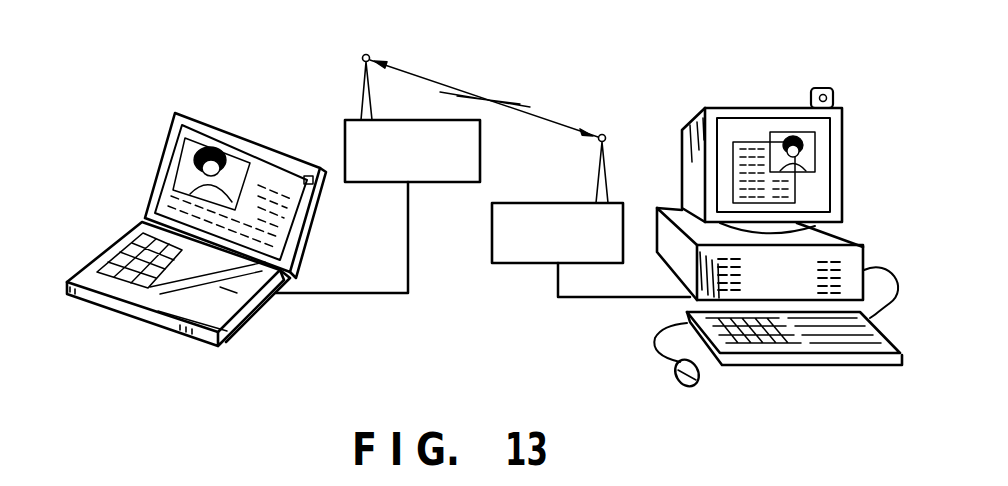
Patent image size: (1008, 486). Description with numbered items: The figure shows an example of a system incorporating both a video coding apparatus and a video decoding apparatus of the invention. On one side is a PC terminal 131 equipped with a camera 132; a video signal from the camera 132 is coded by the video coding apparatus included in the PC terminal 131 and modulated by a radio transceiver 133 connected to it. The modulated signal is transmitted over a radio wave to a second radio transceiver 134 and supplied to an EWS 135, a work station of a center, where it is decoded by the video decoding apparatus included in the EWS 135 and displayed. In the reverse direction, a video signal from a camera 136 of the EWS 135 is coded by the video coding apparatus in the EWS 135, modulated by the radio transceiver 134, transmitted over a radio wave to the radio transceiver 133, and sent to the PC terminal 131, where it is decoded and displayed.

The PC terminal 131 is at (108, 240).
The camera 132 is at (317, 170).
The radio transceiver 133 is at (463, 182).
The radio transceiver 134 is at (512, 265).
The EWS 135 is at (868, 248).
The camera 136 is at (827, 87).